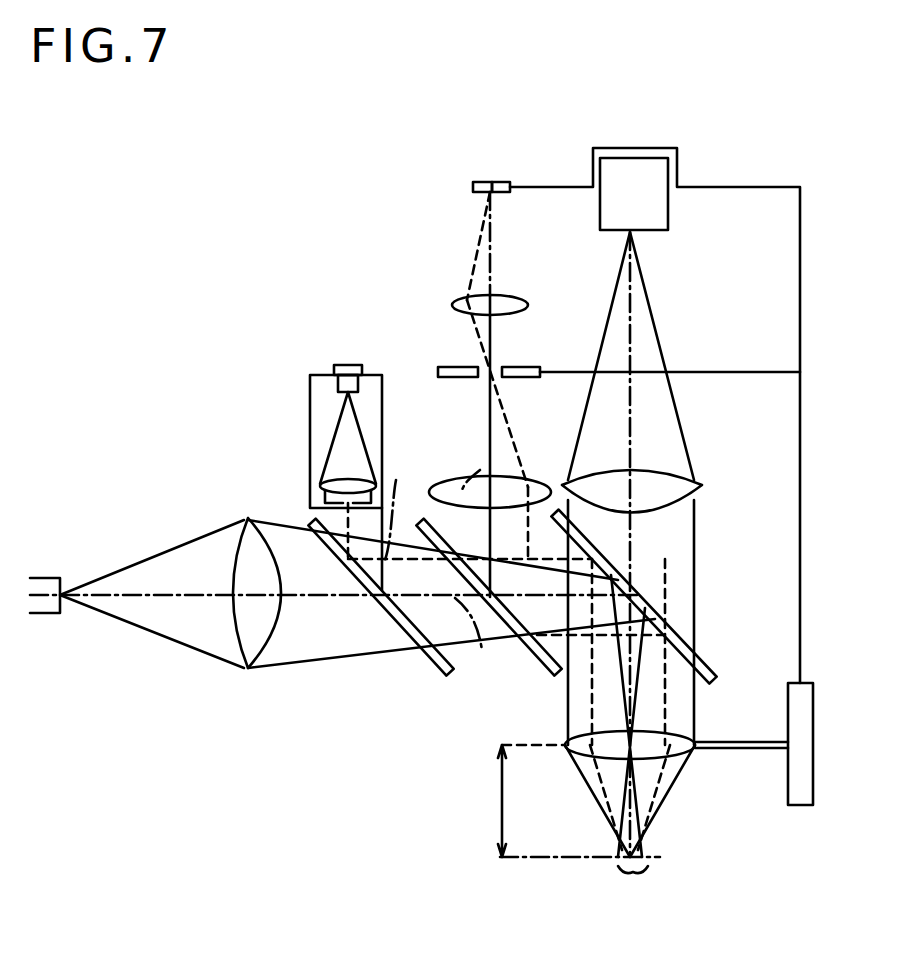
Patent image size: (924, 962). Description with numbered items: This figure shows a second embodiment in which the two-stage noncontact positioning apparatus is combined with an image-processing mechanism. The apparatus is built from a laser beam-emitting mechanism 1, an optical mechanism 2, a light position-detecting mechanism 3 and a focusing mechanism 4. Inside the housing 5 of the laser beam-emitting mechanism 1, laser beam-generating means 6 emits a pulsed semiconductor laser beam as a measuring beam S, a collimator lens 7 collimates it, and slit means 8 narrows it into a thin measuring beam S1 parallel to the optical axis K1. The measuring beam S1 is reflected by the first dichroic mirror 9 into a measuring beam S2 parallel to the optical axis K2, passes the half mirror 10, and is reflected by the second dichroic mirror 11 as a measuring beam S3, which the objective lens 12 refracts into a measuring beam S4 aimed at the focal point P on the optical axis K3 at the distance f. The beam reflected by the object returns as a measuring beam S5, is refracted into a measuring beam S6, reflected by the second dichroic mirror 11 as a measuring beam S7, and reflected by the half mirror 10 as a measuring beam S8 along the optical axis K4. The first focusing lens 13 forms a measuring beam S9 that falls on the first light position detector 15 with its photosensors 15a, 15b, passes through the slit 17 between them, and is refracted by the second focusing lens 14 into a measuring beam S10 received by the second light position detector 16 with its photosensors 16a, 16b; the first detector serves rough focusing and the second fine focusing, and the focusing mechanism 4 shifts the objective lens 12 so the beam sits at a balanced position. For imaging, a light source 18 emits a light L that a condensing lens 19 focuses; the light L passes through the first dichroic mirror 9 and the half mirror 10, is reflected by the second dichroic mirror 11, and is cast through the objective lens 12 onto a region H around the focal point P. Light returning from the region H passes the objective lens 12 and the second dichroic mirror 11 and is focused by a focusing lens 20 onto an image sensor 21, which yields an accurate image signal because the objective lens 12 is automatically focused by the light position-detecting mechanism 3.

The laser beam-emitting mechanism 1 is at (292, 330).
The optical mechanism 2 is at (447, 724).
The light position-detecting mechanism 3 is at (545, 310).
The focusing mechanism 4 is at (798, 806).
The housing 5 is at (383, 392).
The laser beam-generating means 6 is at (343, 365).
The collimator lens 7 is at (325, 480).
The slit means 8 is at (333, 497).
The first dichroic mirror 9 is at (433, 667).
The half mirror 10 is at (538, 668).
The second dichroic mirror 11 is at (660, 618).
The objective lens 12 is at (682, 757).
The first focusing lens 13 is at (552, 486).
The second focusing lens 14 is at (530, 296).
The first light position detector 15 is at (522, 378).
The photosensor 15a is at (524, 372).
The photosensor 15b is at (455, 365).
The second light position detector 16 is at (522, 187).
The photosensor 16a is at (500, 180).
The photosensor 16b is at (478, 180).
The slit 17 is at (465, 485).
The light source 18 is at (52, 616).
The condensing lens 19 is at (262, 668).
The focusing lens 20 is at (668, 475).
The image sensor 21 is at (662, 222).
The measuring beam S is at (338, 430).
The measuring beam S1 is at (340, 515).
The measuring beam S2 is at (380, 545).
The measuring beam S3 is at (590, 720).
The measuring beam S4 is at (598, 794).
The measuring beam S5 is at (656, 795).
The measuring beam S6 is at (670, 698).
The measuring beam S7 is at (580, 650).
The measuring beam S8 is at (525, 530).
The measuring beam S9 is at (458, 315).
The measuring beam S10 is at (472, 262).
The optical axis K1 is at (406, 504).
The optical axis K2 is at (481, 642).
The optical axis K3 is at (665, 728).
The optical axis K4 is at (461, 469).
The light L is at (160, 632).
The focal point P is at (626, 862).
The region H is at (633, 892).
The distance f is at (577, 801).